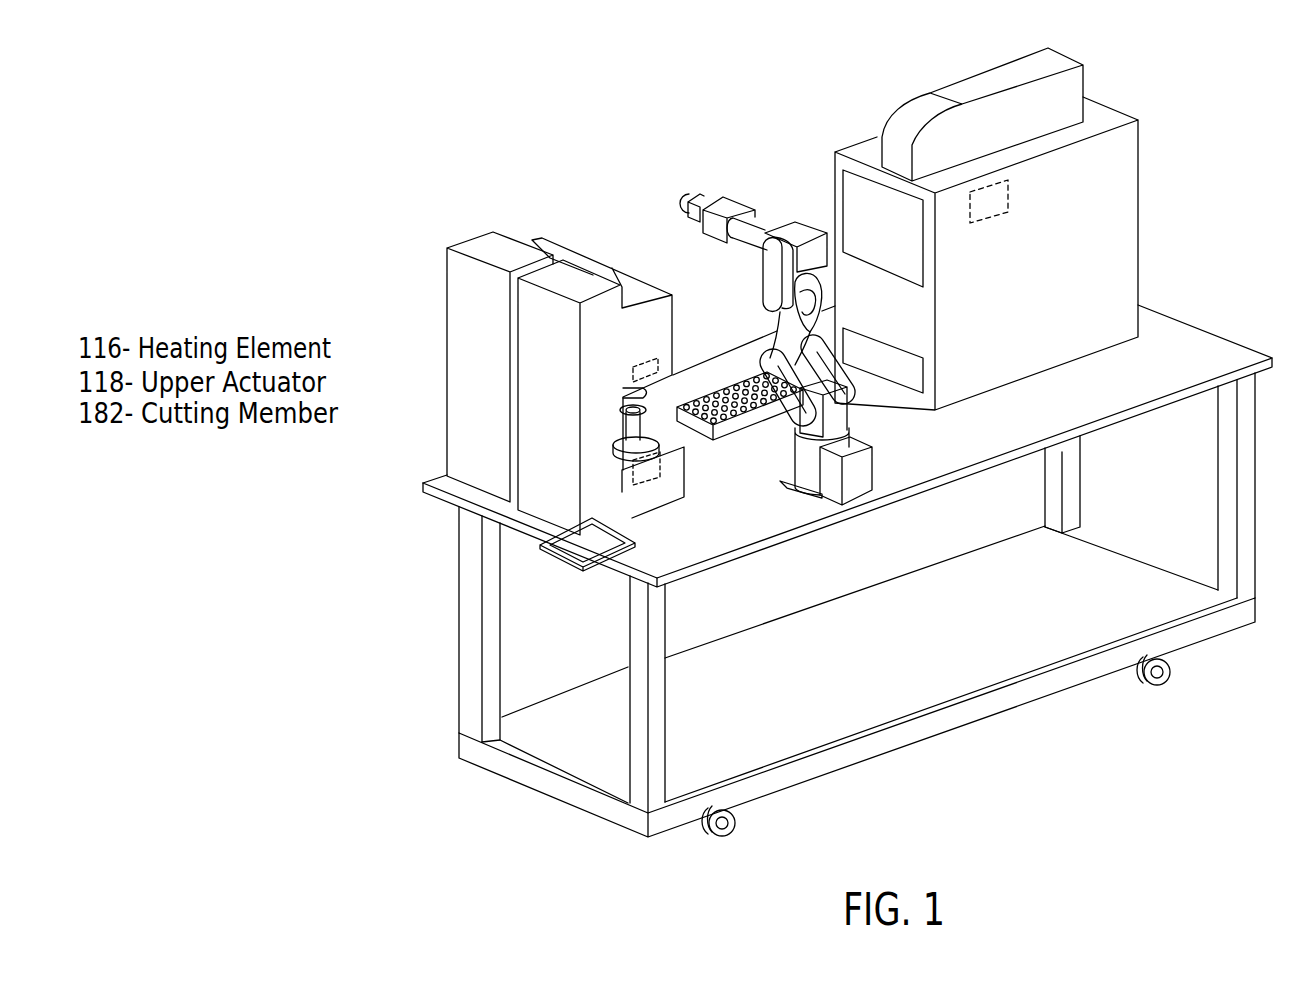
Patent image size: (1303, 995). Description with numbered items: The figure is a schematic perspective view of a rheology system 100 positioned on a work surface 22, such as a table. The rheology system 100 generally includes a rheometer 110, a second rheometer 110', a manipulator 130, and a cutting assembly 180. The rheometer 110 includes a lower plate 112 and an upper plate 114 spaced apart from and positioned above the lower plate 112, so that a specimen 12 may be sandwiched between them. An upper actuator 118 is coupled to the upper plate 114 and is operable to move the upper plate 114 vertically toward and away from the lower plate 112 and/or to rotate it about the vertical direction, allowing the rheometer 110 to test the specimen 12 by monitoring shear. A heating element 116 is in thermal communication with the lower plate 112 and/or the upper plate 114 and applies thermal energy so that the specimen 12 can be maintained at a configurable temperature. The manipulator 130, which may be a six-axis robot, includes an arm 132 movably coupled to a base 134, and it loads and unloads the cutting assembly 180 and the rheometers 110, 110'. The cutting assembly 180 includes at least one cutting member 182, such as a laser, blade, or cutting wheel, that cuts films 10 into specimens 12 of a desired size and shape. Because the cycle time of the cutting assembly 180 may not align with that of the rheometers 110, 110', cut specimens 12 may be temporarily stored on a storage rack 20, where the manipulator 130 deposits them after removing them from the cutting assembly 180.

The rheology system 100 is at (258, 138).
The work surface 22 is at (1220, 328).
The cutting assembly 180 is at (1048, 28).
The cutting member 182 is at (1010, 196).
The rheometer 110' is at (486, 317).
The rheometer 110 is at (603, 354).
The upper actuator 118 is at (640, 360).
The upper plate 114 is at (630, 394).
The lower plate 112 is at (628, 412).
The heating element 116 is at (660, 478).
The film 10 is at (577, 522).
The specimen 12 is at (713, 400).
The manipulator 130 is at (753, 148).
The arm 132 is at (790, 207).
The storage rack 20 is at (741, 372).
The base 134 is at (800, 468).